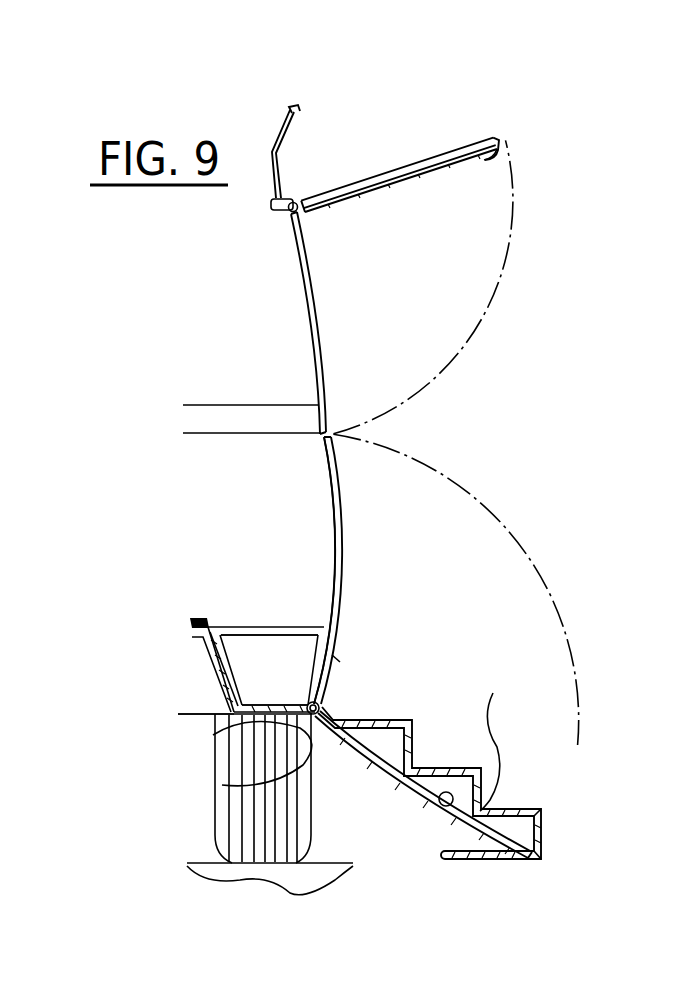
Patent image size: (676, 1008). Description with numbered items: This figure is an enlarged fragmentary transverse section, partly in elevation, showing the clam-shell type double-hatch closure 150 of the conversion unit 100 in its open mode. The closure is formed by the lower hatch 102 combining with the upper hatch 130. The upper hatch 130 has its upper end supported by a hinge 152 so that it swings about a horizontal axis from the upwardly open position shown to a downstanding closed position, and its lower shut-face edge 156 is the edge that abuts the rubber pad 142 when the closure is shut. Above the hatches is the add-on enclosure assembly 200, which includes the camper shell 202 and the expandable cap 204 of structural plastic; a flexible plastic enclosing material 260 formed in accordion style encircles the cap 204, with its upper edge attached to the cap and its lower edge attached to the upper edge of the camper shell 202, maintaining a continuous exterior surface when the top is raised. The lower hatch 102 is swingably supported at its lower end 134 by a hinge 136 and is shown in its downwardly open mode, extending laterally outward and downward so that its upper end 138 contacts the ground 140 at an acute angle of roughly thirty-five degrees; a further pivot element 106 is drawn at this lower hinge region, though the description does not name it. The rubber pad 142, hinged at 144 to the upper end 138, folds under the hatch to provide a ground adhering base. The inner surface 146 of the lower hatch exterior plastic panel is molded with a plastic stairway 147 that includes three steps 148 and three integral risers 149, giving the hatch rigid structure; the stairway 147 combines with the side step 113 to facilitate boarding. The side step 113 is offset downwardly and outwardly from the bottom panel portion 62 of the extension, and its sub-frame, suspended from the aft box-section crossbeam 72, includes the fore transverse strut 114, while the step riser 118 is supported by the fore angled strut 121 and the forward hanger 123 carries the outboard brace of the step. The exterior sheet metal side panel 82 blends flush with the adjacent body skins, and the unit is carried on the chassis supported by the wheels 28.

The add-on enclosure assembly 200 is at (432, 112).
The expandable cap 204 is at (302, 108).
The flexible plastic enclosing material 260 is at (292, 128).
The camper shell 202 is at (287, 171).
The lower shut-face edge 156 is at (500, 140).
The upper hatch 130 is at (452, 169).
The hinge 152 is at (290, 213).
The clam-shell type double-hatch closure 150 is at (475, 402).
The lower hatch 102 is at (340, 540).
The step riser 118 is at (233, 657).
The aft box-section crossbeam 72 is at (265, 628).
The bottom panel portion 62 is at (207, 617).
The fore angled strut 121 is at (220, 673).
The side step 113 is at (258, 704).
The fore transverse strut 114 is at (257, 727).
The hinge 136 is at (227, 783).
The wheels 28 is at (225, 793).
The ground 140 is at (217, 865).
The forward hanger 123 is at (340, 657).
The conversion unit 100 is at (345, 652).
The pivot 106 is at (322, 685).
The lower end 134 is at (323, 708).
The exterior sheet metal side panel 82 is at (383, 778).
The steps 148 is at (408, 770).
The plastic stairway 147 is at (510, 805).
The integral risers 149 is at (537, 815).
The hinge 144 is at (536, 856).
The rubber pad 142 is at (484, 861).
The upper end 138 is at (445, 847).
The inner surface 146 is at (443, 808).